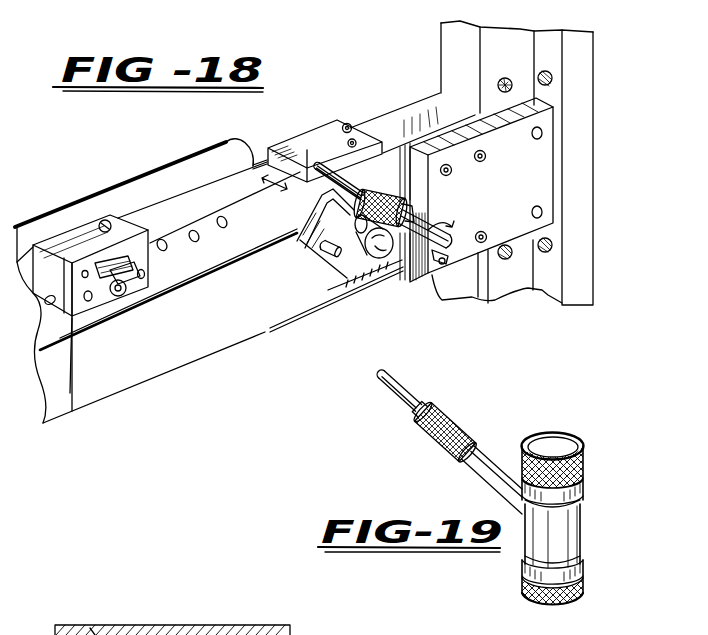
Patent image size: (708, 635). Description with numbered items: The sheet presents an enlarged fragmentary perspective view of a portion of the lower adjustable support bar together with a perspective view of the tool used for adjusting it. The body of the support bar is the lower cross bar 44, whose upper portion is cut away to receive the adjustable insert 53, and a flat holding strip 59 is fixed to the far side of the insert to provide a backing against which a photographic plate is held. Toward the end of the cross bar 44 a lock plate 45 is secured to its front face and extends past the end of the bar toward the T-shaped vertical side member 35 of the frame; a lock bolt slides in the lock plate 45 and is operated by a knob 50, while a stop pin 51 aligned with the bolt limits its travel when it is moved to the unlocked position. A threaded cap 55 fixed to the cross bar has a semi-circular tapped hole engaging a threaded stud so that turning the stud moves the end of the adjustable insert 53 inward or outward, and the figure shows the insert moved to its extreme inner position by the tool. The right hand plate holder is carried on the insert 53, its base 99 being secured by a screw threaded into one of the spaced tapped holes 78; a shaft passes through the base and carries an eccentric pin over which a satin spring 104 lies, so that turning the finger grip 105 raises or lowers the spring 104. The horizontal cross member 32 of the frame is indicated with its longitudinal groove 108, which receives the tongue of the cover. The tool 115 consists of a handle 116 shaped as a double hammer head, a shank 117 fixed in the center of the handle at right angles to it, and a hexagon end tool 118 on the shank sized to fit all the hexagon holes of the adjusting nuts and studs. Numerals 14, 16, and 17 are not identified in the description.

In FIG. 18, the end plate 14 is at (41, 288).
In FIG. 18, the upright column face 16 is at (517, 67).
In FIG. 18, the mounting hole 17 is at (176, 233).
In FIG. 18, the horizontal cross member 32 is at (198, 625).
In FIG. 18, the vertical side member 35 is at (552, 293).
In FIG. 18, the lower cross bar 44 is at (108, 396).
In FIG. 18, the lock plate 45 is at (495, 247).
In FIG. 18, the knob 50 is at (380, 250).
In FIG. 18, the stop pin 51 is at (325, 255).
In FIG. 18, the adjustable insert 53 is at (213, 180).
In FIG. 18, the threaded cap 55 is at (323, 134).
In FIG. 18, the flat holding strip 59 is at (177, 167).
In FIG. 18, the tapped holes 78 is at (226, 228).
In FIG. 18, the base 99 is at (73, 379).
In FIG. 18, the satin spring 104 is at (62, 237).
In FIG. 18, the finger grip 105 is at (115, 260).
In FIG. 18, the longitudinal groove 108 is at (90, 630).
In FIG. 19, the tool 115 is at (565, 423).
In FIG. 18, the handle 116 is at (428, 273).
In FIG. 19, the handle 116 is at (444, 452).
In FIG. 19, the shank 117 is at (530, 548).
In FIG. 18, the hexagon end tool 118 is at (300, 163).
In FIG. 19, the hexagon end tool 118 is at (418, 394).